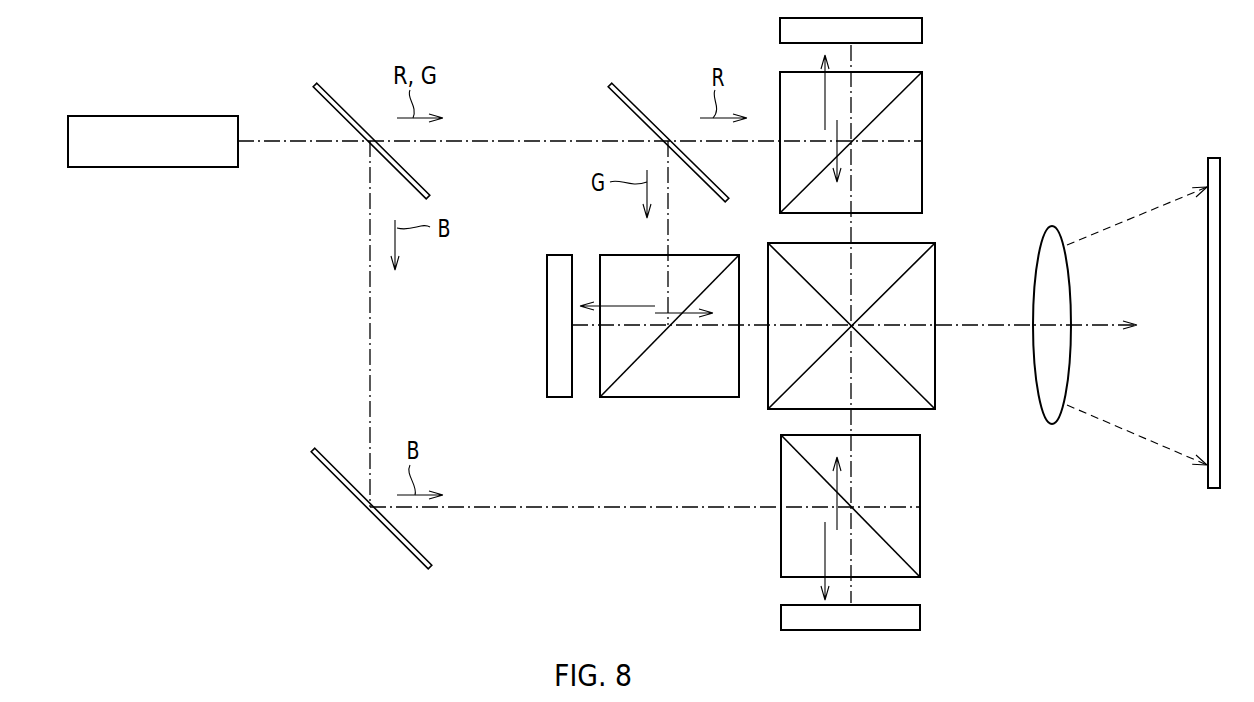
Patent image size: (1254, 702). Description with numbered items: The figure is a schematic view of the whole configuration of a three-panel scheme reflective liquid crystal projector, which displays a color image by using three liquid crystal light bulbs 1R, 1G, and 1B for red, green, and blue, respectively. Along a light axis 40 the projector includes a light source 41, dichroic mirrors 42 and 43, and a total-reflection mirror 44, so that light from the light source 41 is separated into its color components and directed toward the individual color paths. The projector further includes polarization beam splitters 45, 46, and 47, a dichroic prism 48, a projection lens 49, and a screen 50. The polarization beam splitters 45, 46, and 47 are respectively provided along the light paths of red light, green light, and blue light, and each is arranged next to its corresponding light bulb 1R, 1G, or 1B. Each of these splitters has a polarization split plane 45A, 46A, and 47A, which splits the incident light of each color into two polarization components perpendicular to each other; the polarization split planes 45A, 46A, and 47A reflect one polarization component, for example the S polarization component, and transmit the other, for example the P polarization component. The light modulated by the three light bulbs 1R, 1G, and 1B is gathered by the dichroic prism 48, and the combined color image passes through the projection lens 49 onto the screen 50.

The light axis 40 is at (305, 143).
The light source 41 is at (213, 116).
The dichroic mirror 42 is at (320, 87).
The dichroic mirror 43 is at (622, 86).
The total-reflection mirror 44 is at (320, 451).
The polarization beam splitter 45 is at (887, 142).
The polarization split plane 45A is at (895, 100).
The polarization beam splitter 46 is at (669, 356).
The polarization split plane 46A is at (618, 388).
The polarization beam splitter 47 is at (888, 506).
The polarization split plane 47A is at (897, 553).
The dichroic prism 48 is at (935, 265).
The projection lens 49 is at (1062, 228).
The screen 50 is at (1215, 158).
The liquid crystal light bulb 1R is at (922, 30).
The liquid crystal light bulb 1G is at (557, 397).
The liquid crystal light bulb 1B is at (920, 617).